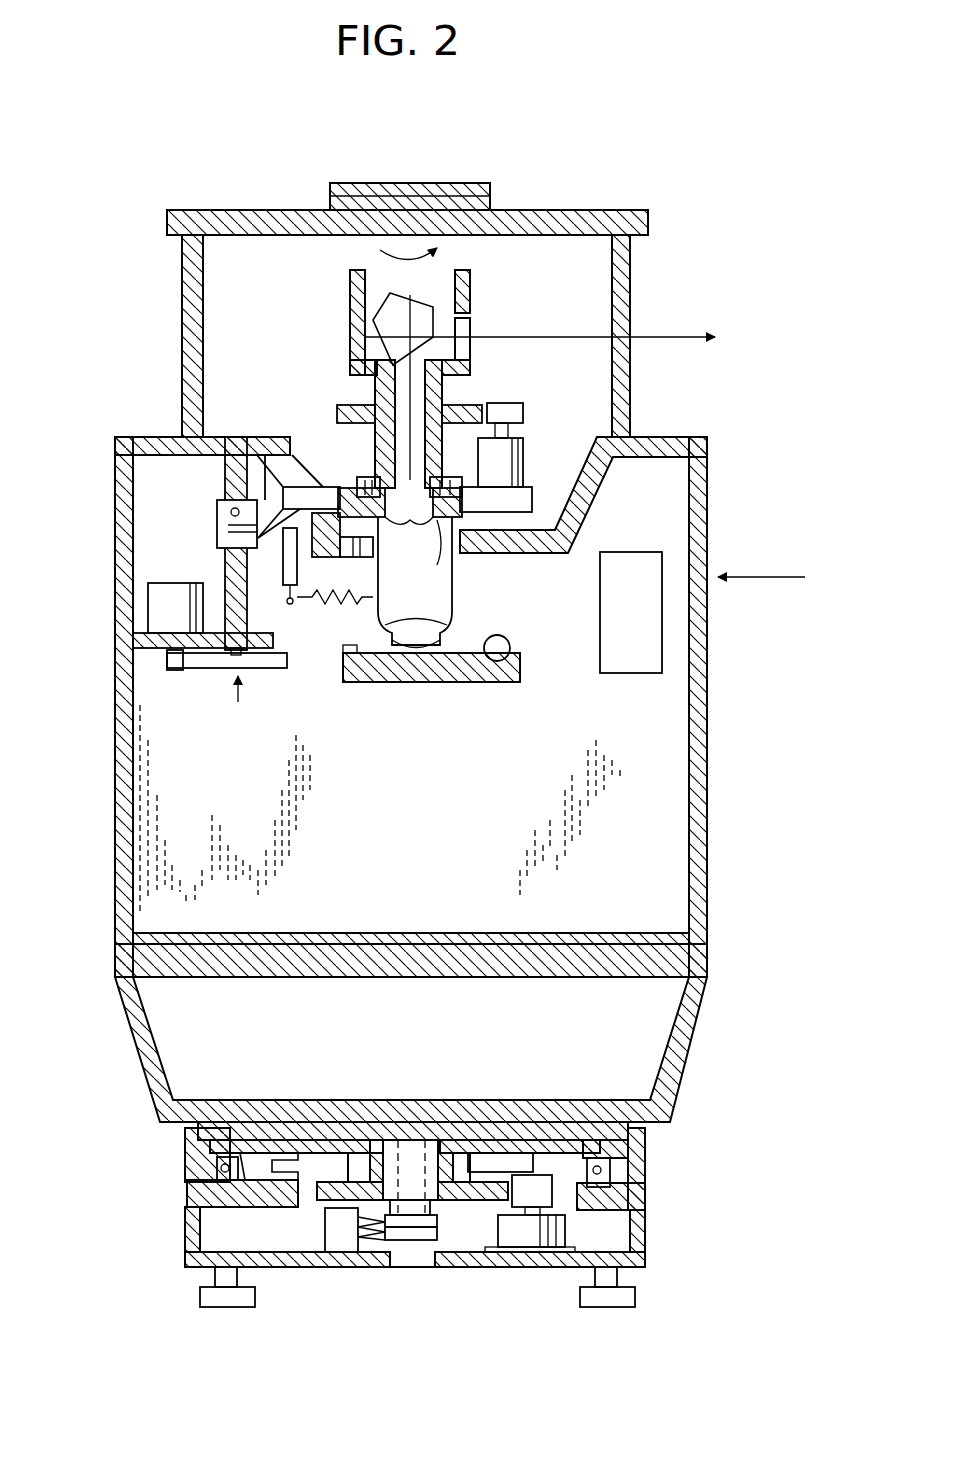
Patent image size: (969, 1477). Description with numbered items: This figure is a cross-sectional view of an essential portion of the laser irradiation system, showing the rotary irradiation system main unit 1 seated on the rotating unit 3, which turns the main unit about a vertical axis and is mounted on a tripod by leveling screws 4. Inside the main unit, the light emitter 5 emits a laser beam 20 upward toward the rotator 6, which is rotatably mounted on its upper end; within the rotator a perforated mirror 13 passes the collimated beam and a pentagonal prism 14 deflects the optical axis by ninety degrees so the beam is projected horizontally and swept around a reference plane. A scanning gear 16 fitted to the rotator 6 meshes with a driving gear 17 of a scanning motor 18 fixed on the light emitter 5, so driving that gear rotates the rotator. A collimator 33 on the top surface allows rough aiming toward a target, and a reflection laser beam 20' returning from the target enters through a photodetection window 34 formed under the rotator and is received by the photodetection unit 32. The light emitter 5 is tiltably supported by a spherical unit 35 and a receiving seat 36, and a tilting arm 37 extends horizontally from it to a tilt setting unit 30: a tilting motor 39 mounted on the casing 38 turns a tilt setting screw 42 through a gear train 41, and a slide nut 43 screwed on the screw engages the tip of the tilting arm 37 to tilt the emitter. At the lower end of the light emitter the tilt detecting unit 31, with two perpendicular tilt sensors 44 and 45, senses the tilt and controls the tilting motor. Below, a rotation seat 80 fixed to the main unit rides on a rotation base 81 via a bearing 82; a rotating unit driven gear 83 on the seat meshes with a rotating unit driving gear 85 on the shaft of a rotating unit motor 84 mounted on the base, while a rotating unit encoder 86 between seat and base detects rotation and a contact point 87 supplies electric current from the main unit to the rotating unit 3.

The rotary irradiation system main unit 1 is at (720, 825).
The rotating unit 3 is at (160, 1222).
The leveling screws 4 is at (630, 1297).
The light emitter 5 is at (420, 598).
The rotator 6 is at (350, 320).
The perforated mirror 13 is at (462, 325).
The pentagonal prism 14 is at (372, 300).
The scanning gear 16 is at (350, 405).
The driving gear 17 is at (505, 415).
The scanning motor 18 is at (520, 455).
The laser beam 20 is at (544, 298).
The reflection laser beam 20' is at (761, 533).
The tilt setting unit 30 is at (238, 706).
The tilt detecting unit 31 is at (462, 688).
The photodetection unit 32 is at (625, 675).
The collimator 33 is at (470, 185).
The photodetection window 34 is at (700, 590).
The spherical unit 35 is at (360, 565).
The receiving seat 36 is at (465, 550).
The tilting arm 37 is at (335, 495).
The casing 38 is at (115, 822).
The tilting motor 39 is at (170, 583).
The gear train 41 is at (200, 670).
The tilt setting screw 42 is at (225, 600).
The slide nut 43 is at (218, 500).
The tilt sensor 44 is at (372, 635).
The tilt sensor 45 is at (512, 640).
The rotation seat 80 is at (645, 1140).
The rotation base 81 is at (645, 1252).
The bearing 82 is at (612, 1175).
The rotating unit driven gear 83 is at (345, 1190).
The rotating unit motor 84 is at (500, 1232).
The rotating unit driving gear 85 is at (532, 1175).
The rotating unit encoder 86 is at (252, 1160).
The contact point 87 is at (377, 1245).